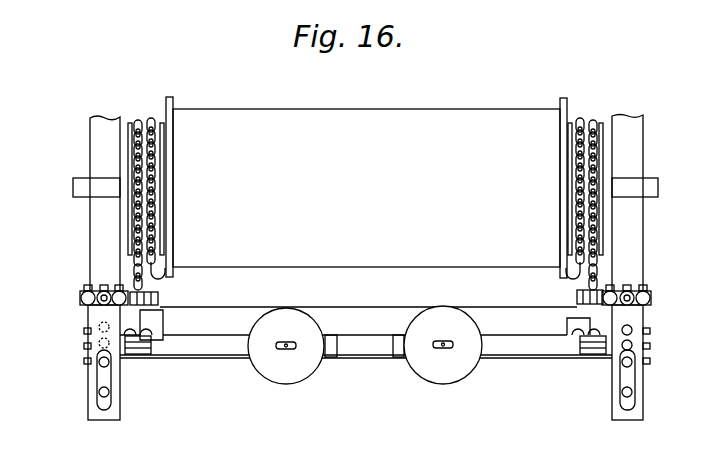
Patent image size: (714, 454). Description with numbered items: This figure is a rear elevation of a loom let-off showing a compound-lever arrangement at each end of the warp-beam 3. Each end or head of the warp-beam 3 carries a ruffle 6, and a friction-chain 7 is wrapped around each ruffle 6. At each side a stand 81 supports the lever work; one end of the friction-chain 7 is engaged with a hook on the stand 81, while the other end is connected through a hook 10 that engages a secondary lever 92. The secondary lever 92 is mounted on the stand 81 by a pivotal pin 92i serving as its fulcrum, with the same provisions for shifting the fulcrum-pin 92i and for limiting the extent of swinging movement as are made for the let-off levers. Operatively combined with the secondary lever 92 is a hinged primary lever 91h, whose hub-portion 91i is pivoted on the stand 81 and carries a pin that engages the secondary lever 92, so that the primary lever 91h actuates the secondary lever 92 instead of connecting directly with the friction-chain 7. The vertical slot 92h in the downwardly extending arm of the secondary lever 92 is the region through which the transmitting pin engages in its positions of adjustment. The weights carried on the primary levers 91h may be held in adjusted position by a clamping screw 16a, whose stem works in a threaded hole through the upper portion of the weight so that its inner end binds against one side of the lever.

The warp-beam 3 is at (173, 104).
The ruffle 6 is at (160, 122).
The friction-chain 7 is at (153, 122).
The hook 10 is at (162, 278).
The stand 81 is at (165, 326).
The secondary lever 92 is at (333, 352).
The pivotal pin 92i is at (97, 310).
The slot 92h is at (333, 366).
The hub-portion 91i is at (576, 306).
The hinged primary lever 91h is at (192, 350).
The clamping screw 16a is at (283, 346).